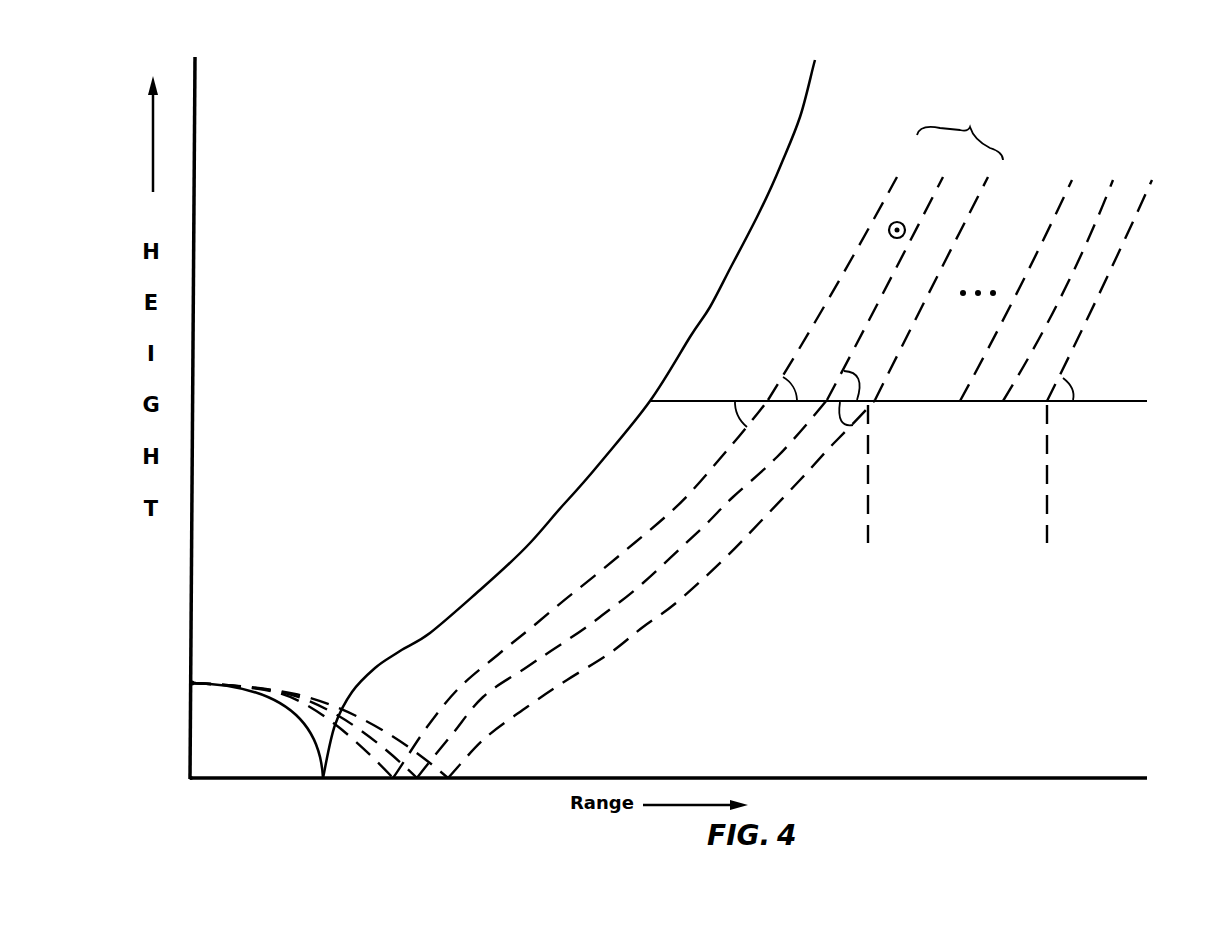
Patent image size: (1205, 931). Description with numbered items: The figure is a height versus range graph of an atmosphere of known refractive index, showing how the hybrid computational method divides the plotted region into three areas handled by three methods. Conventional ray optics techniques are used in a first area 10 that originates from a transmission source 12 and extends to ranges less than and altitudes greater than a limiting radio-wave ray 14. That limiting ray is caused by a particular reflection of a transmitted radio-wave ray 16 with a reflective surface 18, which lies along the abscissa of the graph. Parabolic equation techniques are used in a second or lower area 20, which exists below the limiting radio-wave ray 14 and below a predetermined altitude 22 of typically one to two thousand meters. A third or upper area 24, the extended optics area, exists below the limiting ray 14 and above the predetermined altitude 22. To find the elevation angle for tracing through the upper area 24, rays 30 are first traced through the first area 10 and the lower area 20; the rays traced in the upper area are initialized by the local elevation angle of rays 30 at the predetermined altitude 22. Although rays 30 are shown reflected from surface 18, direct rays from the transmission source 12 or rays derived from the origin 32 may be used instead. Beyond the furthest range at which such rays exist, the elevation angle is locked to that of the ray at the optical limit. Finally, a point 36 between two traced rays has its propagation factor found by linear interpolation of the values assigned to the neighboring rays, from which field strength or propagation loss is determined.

The first area 10 is at (438, 248).
The transmission source 12 is at (176, 679).
The limiting radio-wave ray 14 is at (524, 537).
The transmitted radio-wave ray 16 is at (290, 712).
The reflective surface 18 is at (527, 778).
The second or lower area 20 is at (938, 624).
The predetermined altitude 22 is at (1128, 398).
The third or upper area 24 is at (1057, 157).
The rays 30 is at (587, 597).
The origin 32 is at (180, 789).
The point 36 is at (888, 228).